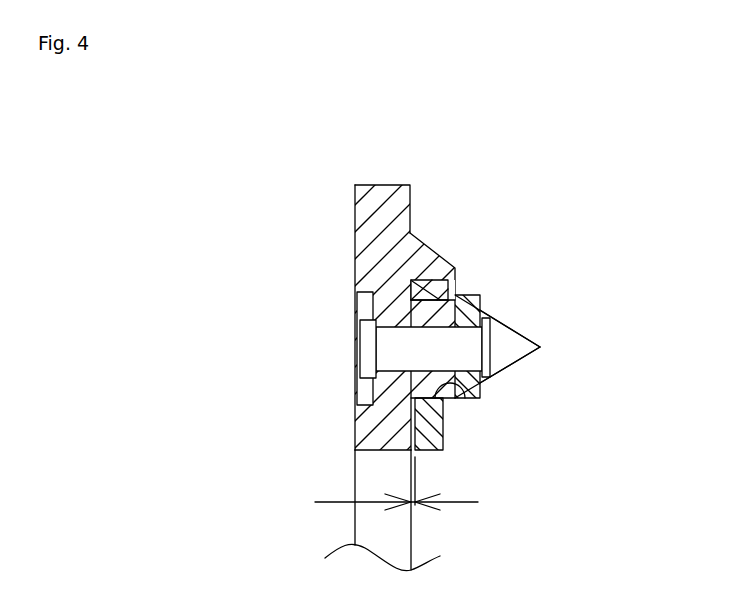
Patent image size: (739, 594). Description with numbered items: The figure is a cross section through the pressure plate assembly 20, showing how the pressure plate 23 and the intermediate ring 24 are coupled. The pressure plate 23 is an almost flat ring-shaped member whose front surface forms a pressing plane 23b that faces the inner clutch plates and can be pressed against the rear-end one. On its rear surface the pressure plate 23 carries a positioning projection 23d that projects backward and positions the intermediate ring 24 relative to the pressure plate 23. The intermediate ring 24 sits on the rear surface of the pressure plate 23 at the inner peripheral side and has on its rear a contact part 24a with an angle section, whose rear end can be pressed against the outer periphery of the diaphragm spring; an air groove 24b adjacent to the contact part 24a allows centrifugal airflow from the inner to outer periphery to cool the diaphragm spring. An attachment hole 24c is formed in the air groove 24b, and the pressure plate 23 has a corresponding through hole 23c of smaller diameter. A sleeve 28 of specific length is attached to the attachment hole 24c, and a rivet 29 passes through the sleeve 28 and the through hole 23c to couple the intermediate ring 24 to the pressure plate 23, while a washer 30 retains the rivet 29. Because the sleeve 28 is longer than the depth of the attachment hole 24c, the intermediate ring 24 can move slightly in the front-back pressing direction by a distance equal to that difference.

The pressure plate assembly 20 is at (590, 230).
The pressure plate 23 is at (372, 181).
The pressing plane 23b is at (355, 237).
The through hole 23c is at (383, 330).
The positioning projection 23d is at (430, 250).
The intermediate ring 24 is at (505, 318).
The contact part 24a is at (528, 330).
The air groove 24b is at (505, 358).
The attachment hole 24c is at (468, 398).
The sleeve 28 is at (433, 308).
The rivet 29 is at (395, 357).
The washer 30 is at (475, 293).